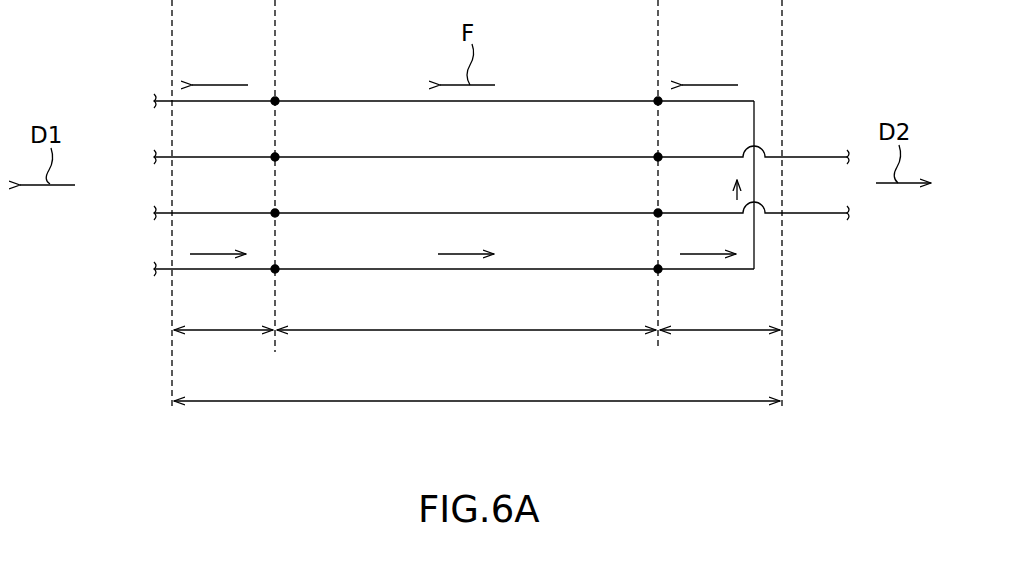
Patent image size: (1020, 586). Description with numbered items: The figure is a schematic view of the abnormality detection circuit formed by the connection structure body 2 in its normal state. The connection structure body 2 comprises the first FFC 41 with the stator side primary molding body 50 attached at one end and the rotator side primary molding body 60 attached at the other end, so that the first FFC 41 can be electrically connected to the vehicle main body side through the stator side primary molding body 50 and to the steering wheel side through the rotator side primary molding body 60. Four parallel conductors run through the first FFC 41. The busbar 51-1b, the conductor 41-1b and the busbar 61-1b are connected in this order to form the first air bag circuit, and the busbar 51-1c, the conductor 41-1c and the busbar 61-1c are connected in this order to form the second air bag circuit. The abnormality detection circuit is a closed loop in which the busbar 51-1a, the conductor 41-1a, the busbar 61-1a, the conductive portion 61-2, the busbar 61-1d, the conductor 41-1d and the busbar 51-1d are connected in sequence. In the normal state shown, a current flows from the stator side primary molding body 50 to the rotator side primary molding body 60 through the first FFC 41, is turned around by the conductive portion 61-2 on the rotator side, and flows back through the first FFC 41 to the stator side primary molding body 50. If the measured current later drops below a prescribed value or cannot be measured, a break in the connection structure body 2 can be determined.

The connection structure body 2 is at (489, 402).
The first FFC 41 is at (489, 331).
The conductor 41-1a is at (316, 269).
The conductor 41-1b is at (316, 213).
The conductor 41-1c is at (316, 157).
The conductor 41-1d is at (316, 101).
The stator side primary molding body 50 is at (228, 331).
The busbar 51-1a is at (224, 269).
The busbar 51-1b is at (224, 213).
The busbar 51-1c is at (224, 157).
The busbar 51-1d is at (224, 101).
The rotator side primary molding body 60 is at (725, 331).
The busbar 61-1a is at (730, 269).
The busbar 61-1b is at (730, 213).
The busbar 61-1c is at (730, 157).
The busbar 61-1d is at (730, 101).
The conductive portion 61-2 is at (755, 245).